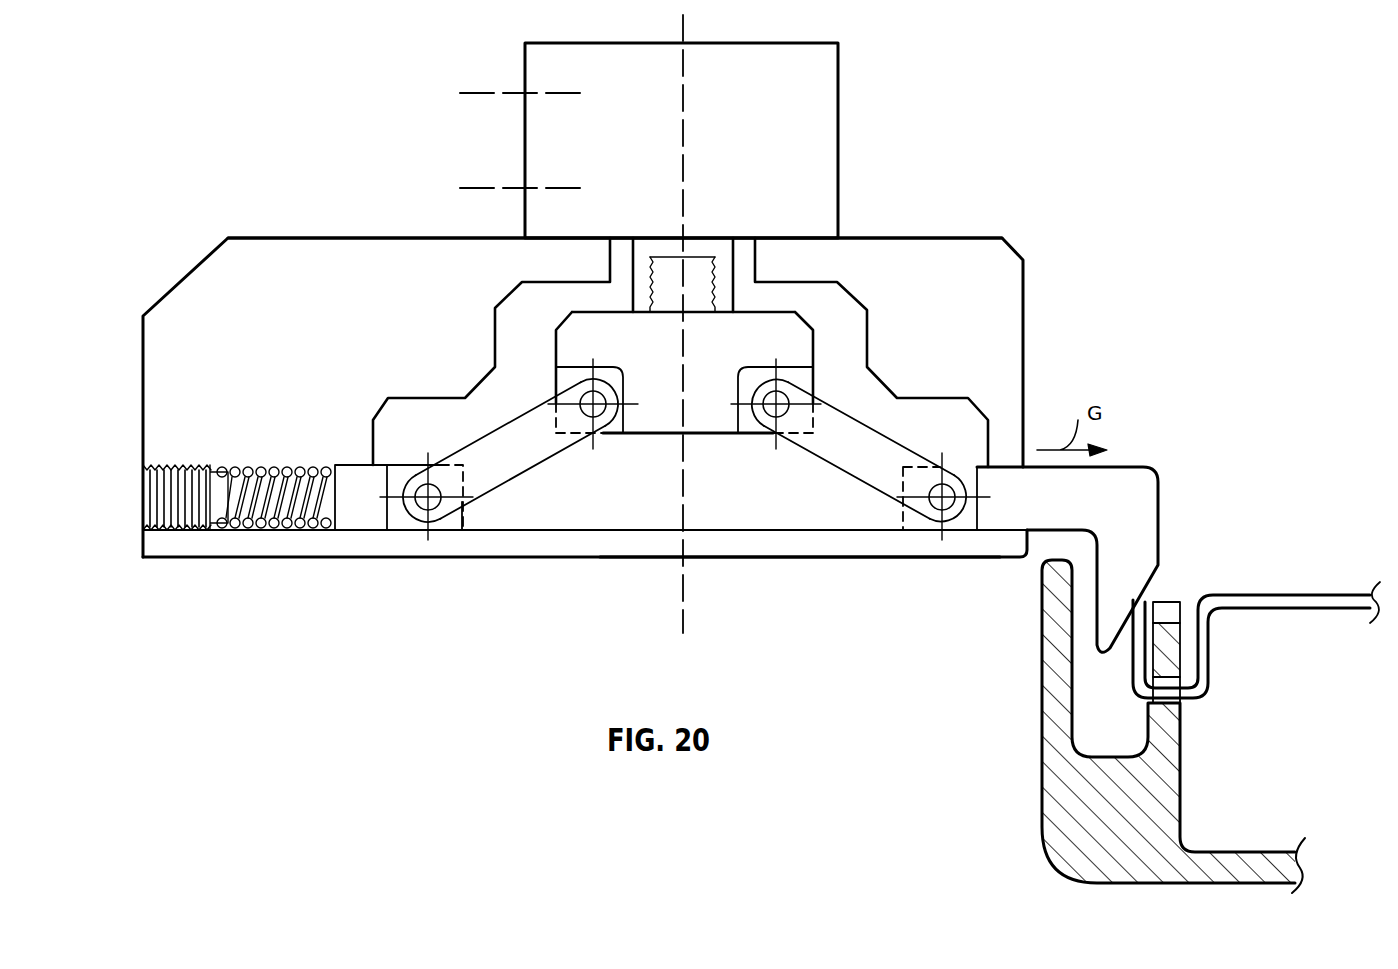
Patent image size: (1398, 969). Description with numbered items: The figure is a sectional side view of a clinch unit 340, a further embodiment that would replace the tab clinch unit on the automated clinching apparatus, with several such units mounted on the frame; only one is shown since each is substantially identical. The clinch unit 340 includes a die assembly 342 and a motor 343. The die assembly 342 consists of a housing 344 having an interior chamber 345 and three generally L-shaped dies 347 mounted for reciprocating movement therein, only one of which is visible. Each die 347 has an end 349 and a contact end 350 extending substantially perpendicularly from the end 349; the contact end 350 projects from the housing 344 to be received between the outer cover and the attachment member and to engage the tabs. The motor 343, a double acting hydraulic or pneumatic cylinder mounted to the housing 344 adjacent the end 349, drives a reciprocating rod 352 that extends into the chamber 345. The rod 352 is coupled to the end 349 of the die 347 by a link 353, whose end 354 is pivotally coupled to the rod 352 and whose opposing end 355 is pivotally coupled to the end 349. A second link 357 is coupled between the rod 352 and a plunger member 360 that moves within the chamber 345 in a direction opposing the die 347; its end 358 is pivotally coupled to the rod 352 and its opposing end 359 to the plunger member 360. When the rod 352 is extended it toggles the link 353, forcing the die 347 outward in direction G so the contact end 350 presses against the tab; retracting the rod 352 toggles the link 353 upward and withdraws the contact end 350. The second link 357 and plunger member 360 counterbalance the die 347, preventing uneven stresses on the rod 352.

The clinch unit 340 is at (583, 568).
The die assembly 342 is at (1023, 330).
The motor 343 is at (840, 203).
The housing 344 is at (1005, 260).
The interior chamber 345 is at (812, 495).
The die 347 is at (1028, 512).
The end 349 is at (912, 518).
The contact end 350 is at (1125, 597).
The reciprocating rod 352 is at (710, 257).
The link 353 is at (835, 428).
The end of link 354 is at (777, 433).
The opposing end of link 355 is at (945, 478).
The second link 357 is at (520, 458).
The end of second link 358 is at (603, 420).
The opposing end of second link 359 is at (437, 520).
The plunger member 360 is at (365, 512).